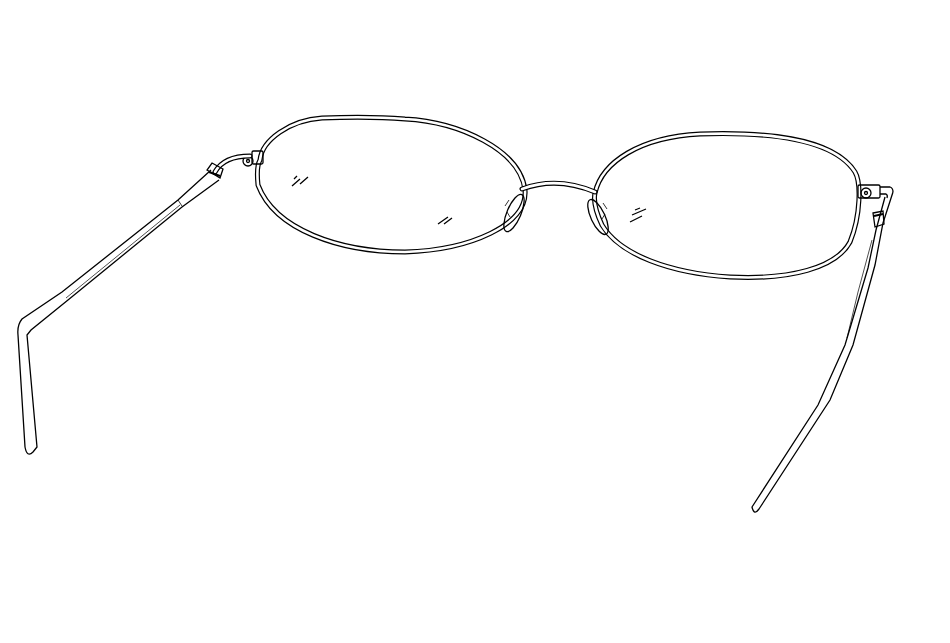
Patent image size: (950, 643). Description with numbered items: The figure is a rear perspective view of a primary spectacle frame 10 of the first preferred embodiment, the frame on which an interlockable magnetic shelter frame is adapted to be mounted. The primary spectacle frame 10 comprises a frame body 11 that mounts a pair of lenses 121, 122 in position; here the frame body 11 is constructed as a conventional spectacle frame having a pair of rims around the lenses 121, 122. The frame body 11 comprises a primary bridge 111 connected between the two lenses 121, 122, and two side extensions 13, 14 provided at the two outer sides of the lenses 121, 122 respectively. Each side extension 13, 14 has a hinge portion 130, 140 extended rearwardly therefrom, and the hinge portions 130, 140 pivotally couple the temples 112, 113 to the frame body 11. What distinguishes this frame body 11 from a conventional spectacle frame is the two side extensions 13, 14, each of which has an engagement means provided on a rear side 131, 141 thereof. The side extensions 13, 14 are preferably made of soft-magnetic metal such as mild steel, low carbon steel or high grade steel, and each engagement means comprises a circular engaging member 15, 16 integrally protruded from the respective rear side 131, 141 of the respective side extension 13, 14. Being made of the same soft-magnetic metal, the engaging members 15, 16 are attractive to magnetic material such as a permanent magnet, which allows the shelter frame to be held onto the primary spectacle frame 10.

The primary spectacle frame 10 is at (684, 418).
The frame body 11 is at (679, 276).
The primary bridge 111 is at (553, 175).
The temple 112 is at (111, 257).
The temple 113 is at (848, 325).
The lens 121 is at (402, 241).
The lens 122 is at (648, 242).
The side extension 13 is at (244, 147).
The hinge portion 130 is at (204, 164).
The rear side 131 is at (256, 148).
The side extension 14 is at (879, 165).
The hinge portion 140 is at (876, 210).
The rear side 141 is at (862, 183).
The circular engaging member 15 is at (246, 167).
The circular engaging member 16 is at (857, 198).